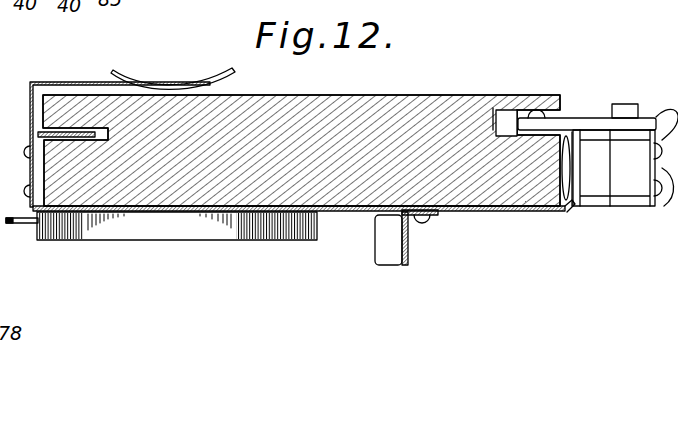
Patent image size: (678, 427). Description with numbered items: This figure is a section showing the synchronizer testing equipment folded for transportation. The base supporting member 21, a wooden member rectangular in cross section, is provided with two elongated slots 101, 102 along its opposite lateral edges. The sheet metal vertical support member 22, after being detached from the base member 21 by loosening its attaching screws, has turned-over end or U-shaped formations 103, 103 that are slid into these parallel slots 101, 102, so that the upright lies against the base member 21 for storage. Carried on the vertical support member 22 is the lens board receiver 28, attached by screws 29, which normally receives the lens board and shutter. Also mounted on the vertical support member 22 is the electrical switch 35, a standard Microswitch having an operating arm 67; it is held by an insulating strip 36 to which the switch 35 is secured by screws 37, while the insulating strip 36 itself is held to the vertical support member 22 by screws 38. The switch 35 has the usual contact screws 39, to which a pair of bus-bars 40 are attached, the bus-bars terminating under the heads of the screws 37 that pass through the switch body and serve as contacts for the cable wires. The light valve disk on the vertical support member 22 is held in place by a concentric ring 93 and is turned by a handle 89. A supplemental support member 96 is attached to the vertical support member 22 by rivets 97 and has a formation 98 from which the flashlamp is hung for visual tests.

The base supporting member 21 is at (402, 98).
The vertical support member 22 is at (478, 212).
The lens board receiver 28 is at (403, 265).
The screws 29 is at (423, 224).
The electrical switch 35 is at (631, 190).
The insulating strip 36 is at (578, 117).
The screws 37 is at (625, 104).
The screws 38 is at (541, 112).
The contact screws 39 is at (661, 189).
The bus-bars 40 is at (663, 112).
The operating arm 67 is at (569, 165).
The handle 89 is at (23, 226).
The ring 93 is at (185, 231).
The supplemental support member 96 is at (70, 83).
The rivets 97 is at (24, 151).
The formation 98 is at (140, 80).
The elongated slot 101 is at (65, 129).
The elongated slot 102 is at (503, 112).
The turned-over end or U-shaped formations 103 is at (78, 137).